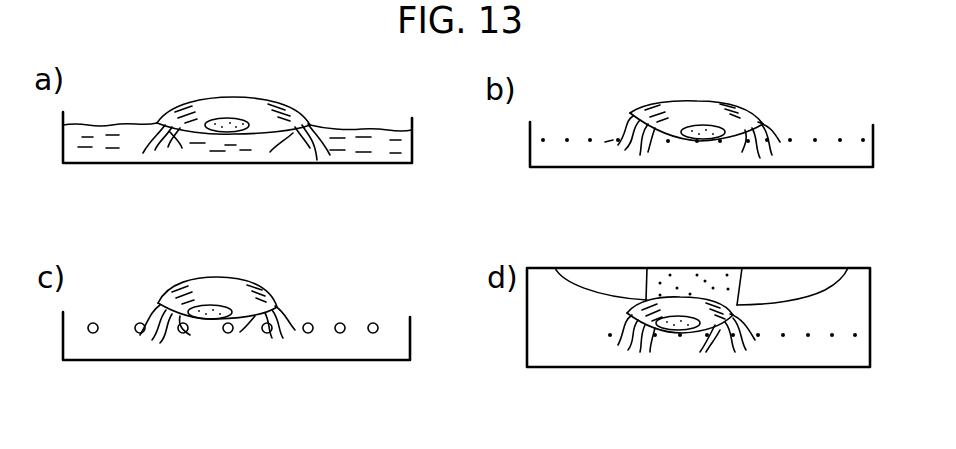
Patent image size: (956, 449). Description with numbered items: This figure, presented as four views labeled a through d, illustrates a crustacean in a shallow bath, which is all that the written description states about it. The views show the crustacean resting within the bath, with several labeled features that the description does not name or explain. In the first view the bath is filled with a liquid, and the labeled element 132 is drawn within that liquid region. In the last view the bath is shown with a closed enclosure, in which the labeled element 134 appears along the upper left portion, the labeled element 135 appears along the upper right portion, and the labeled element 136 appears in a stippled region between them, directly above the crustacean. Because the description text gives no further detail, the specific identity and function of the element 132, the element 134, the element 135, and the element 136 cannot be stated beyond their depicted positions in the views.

The liquid medium 132 is at (375, 140).
The cover layer 134 is at (610, 270).
The cover layer recess 135 is at (800, 301).
The porous region 136 is at (707, 278).